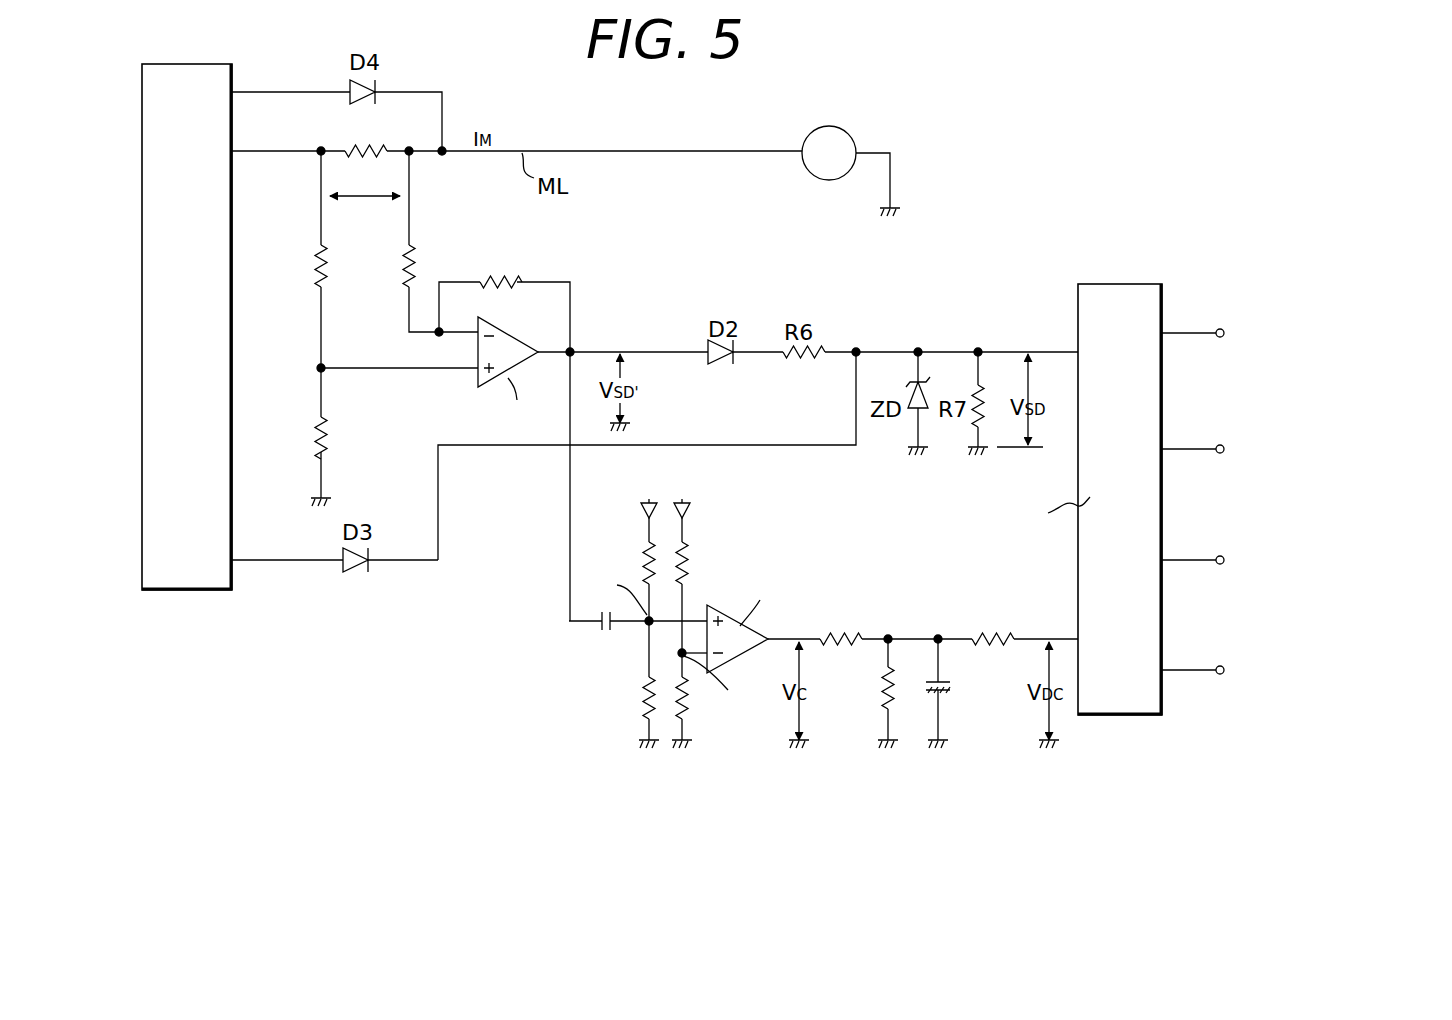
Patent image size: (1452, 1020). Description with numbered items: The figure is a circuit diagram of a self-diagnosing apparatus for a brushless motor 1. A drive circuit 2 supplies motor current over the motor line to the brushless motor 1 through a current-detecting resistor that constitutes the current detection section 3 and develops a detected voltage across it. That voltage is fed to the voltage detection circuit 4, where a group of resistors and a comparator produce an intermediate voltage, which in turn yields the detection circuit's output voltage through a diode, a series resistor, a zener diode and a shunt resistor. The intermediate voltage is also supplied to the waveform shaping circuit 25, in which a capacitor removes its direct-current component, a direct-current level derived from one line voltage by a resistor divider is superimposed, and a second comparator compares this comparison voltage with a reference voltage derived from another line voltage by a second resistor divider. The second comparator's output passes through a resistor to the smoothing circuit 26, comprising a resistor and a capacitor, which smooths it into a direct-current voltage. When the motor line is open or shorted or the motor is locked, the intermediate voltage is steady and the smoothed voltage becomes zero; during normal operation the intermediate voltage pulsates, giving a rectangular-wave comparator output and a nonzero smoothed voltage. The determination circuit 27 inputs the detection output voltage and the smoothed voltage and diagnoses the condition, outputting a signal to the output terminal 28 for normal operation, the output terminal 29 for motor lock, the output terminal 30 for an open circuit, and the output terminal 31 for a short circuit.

The brushless motor 1 is at (850, 136).
The drive circuit 2 is at (233, 592).
The current detection section 3 is at (338, 134).
The voltage detection circuit 4 is at (713, 267).
The waveform shaping circuit 25 is at (753, 535).
The smoothing circuit 26 is at (928, 598).
The determination circuit 27 is at (1138, 716).
The output terminal 28 is at (1216, 330).
The output terminal 29 is at (1216, 446).
The output terminal 30 is at (1216, 557).
The output terminal 31 is at (1216, 667).